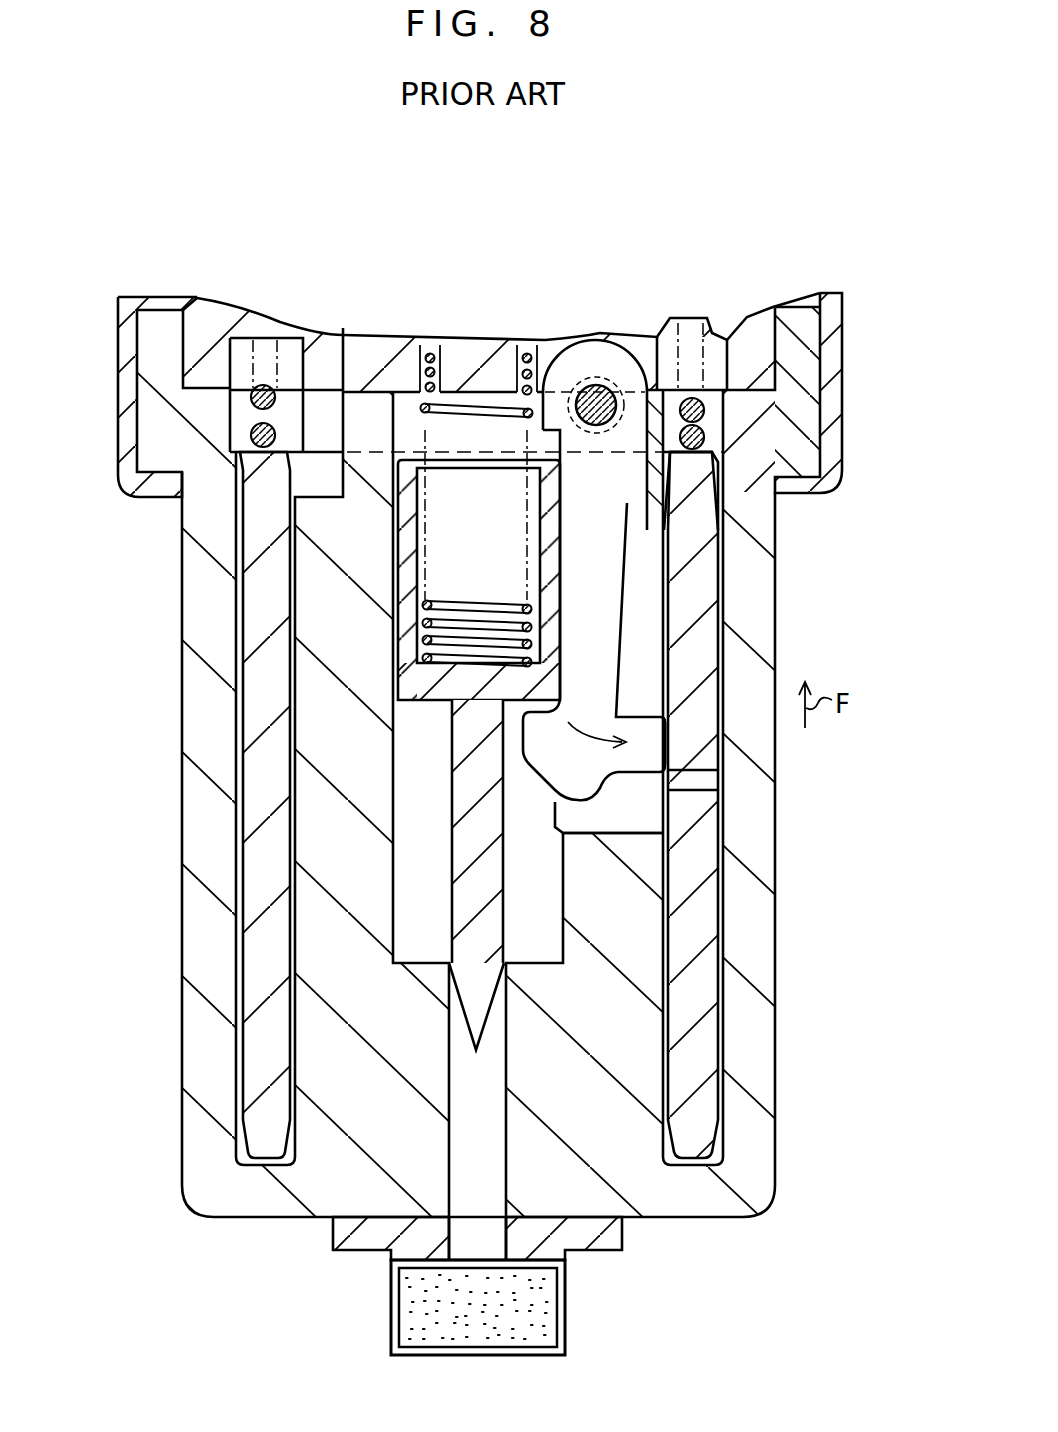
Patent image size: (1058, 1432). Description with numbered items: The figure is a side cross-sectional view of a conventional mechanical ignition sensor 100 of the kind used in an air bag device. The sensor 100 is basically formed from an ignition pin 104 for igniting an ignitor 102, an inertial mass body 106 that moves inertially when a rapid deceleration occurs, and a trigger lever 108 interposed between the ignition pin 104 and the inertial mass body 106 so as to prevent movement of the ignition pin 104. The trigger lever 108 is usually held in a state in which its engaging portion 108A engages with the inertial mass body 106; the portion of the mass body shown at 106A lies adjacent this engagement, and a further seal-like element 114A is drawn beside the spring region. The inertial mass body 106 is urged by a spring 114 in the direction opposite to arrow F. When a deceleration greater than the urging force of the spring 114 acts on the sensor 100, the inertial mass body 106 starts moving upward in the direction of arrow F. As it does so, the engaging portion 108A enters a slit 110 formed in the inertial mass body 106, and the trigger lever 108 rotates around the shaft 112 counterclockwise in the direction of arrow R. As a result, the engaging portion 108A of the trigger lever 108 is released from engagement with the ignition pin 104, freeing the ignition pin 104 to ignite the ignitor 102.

The mechanical ignition sensor 100 is at (623, 224).
The ignitor 102 is at (542, 1300).
The ignition pin 104 is at (497, 870).
The inertial mass body 106 is at (690, 642).
The tapered portion of sleeve 106A is at (715, 448).
The trigger lever 108 is at (622, 507).
The engaging portion 108A is at (655, 738).
The slit 110 is at (697, 790).
The shaft 112 is at (593, 387).
The spring 114 is at (703, 407).
The seal ring 114A is at (705, 437).